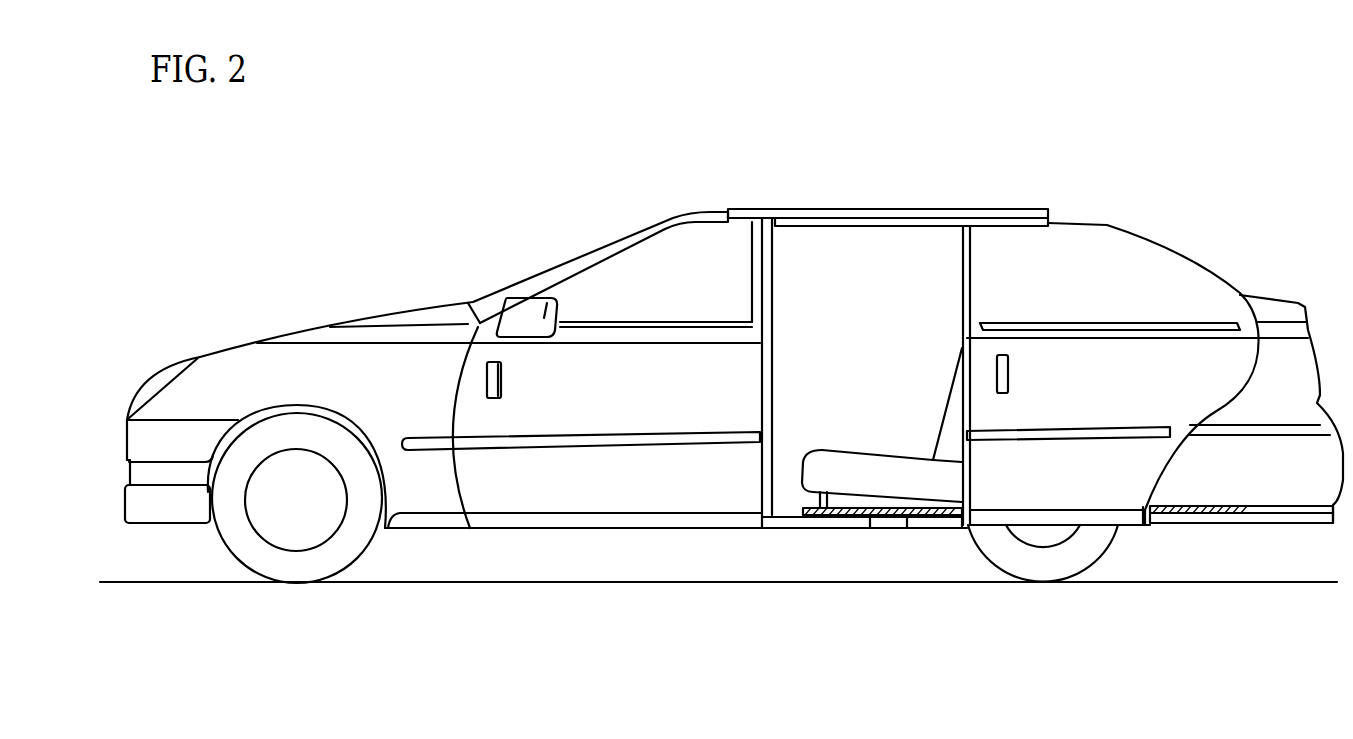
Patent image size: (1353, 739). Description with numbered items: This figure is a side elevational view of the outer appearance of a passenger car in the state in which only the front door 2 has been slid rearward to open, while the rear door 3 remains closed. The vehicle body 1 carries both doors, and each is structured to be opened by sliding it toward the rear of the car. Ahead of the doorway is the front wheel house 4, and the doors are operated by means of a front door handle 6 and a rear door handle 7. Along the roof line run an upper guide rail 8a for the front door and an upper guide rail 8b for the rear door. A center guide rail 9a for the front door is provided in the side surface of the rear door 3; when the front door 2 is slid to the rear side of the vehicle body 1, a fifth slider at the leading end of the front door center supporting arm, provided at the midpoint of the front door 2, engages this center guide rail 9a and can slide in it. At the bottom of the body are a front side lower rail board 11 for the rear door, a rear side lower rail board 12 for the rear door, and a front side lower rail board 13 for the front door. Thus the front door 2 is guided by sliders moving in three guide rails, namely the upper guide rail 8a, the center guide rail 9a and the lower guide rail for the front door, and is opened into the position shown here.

The vehicle body 1 is at (900, 111).
The front door 2 is at (640, 492).
The rear door 3 is at (1095, 250).
The front wheel house 4 is at (207, 500).
The front door handle 6 is at (502, 382).
The rear door handle 7 is at (1008, 378).
The upper guide rail for the front door 8a is at (797, 210).
The upper guide rail for the rear door 8b is at (925, 223).
The center guide rail for the front door 9a is at (1147, 323).
The front side lower rail board for the rear door 11 is at (910, 516).
The rear side lower rail board for the rear door 12 is at (1197, 513).
The front side lower rail board for the front door 13 is at (793, 528).